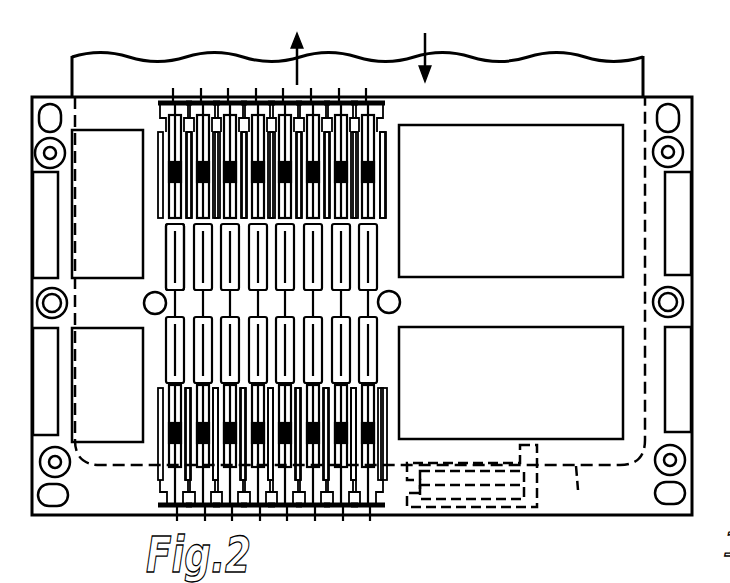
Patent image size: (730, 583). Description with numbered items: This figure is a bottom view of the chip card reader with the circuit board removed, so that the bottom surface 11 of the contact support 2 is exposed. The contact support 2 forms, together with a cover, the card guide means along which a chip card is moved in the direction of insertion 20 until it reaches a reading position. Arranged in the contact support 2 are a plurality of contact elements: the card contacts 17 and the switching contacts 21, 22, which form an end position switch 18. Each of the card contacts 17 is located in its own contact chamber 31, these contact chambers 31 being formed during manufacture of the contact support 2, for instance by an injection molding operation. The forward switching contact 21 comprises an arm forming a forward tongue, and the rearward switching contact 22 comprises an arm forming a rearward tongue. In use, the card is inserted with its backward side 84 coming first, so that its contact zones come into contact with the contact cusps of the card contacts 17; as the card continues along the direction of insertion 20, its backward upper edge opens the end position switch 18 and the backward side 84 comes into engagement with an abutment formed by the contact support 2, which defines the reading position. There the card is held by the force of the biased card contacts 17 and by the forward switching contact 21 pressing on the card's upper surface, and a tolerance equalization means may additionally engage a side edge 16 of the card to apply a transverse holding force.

The contact support 2 is at (655, 210).
The bottom surface 11 is at (90, 113).
The side edge 16 is at (72, 70).
The card contacts 17 is at (363, 242).
The end position switch 18 is at (480, 457).
The direction of insertion 20 is at (297, 57).
The forward switching contact 21 is at (488, 478).
The rearward switching contact 22 is at (446, 505).
The contact chambers 31 is at (175, 245).
The backward side 84 is at (578, 490).